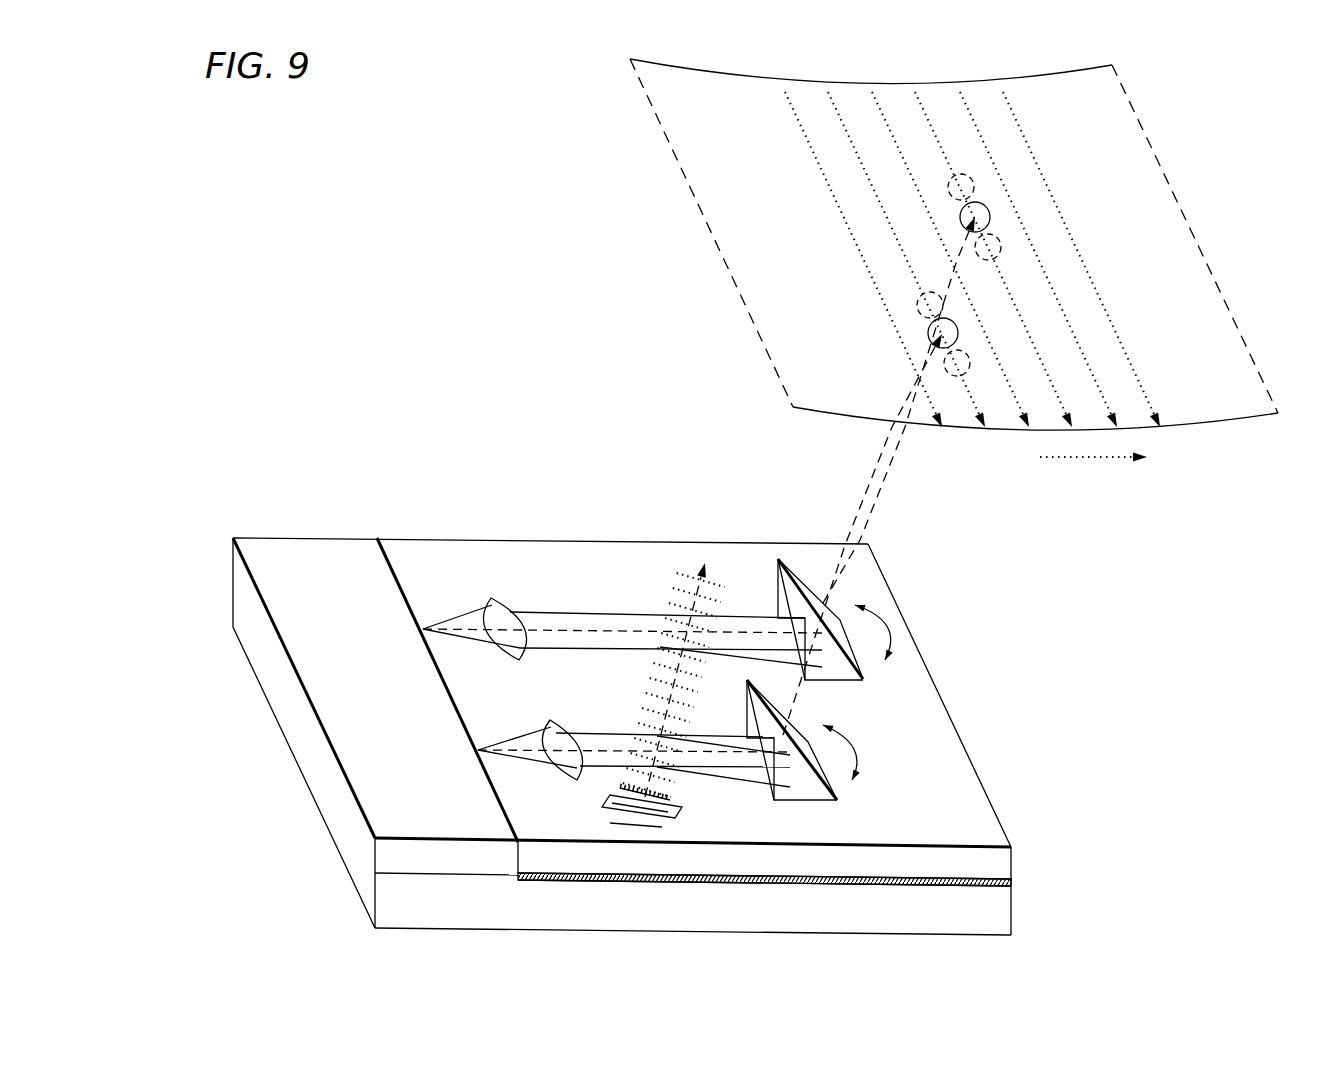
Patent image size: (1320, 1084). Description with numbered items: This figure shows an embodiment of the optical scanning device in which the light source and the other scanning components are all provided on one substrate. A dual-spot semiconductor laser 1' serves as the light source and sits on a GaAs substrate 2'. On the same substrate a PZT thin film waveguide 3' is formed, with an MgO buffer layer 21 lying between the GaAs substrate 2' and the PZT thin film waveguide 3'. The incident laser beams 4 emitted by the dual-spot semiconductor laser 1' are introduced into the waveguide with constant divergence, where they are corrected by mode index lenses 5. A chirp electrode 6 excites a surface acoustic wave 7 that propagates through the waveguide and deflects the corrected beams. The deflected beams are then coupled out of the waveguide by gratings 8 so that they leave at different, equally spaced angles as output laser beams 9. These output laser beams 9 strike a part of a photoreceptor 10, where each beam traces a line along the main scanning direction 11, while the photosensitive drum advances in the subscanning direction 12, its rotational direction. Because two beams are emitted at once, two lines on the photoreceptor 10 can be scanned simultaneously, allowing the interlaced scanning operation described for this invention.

The dual-spot semiconductor laser 1' is at (622, 733).
The GaAs substrate 2' is at (693, 891).
The PZT thin film waveguide 3' is at (764, 860).
The incident laser beams 4 is at (634, 757).
The mode index lenses 5 is at (622, 619).
The chirp electrode 6 is at (659, 806).
The surface acoustic wave 7 is at (674, 647).
The gratings 8 is at (820, 693).
The output laser beams 9 is at (943, 275).
The part of a photoreceptor 10 is at (954, 244).
The main scanning direction 11 is at (974, 260).
The subscanning direction 12 is at (1120, 459).
The MgO buffer layer 21 is at (1011, 882).